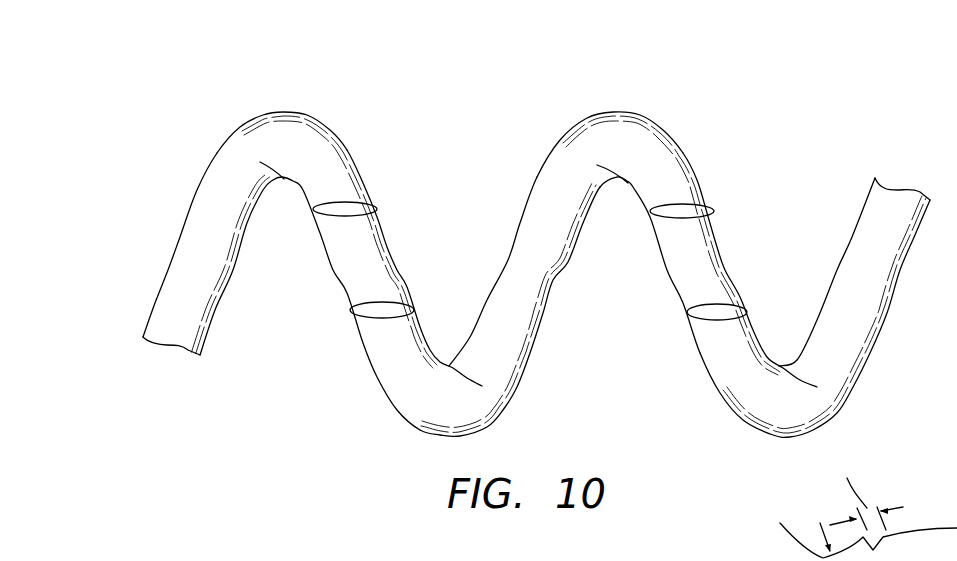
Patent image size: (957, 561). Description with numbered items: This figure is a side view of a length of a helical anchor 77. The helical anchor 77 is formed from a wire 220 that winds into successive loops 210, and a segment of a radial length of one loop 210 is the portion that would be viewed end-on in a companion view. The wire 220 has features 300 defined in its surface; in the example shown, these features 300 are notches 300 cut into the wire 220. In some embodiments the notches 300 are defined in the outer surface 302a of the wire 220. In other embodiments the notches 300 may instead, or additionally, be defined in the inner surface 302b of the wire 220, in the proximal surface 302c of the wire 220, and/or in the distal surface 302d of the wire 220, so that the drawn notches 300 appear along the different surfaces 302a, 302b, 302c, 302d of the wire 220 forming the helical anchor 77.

The helical anchor 77 is at (552, 89).
The loop 210 is at (345, 143).
The wire 220 is at (697, 168).
The notches 300 is at (358, 208).
The outer surface 302a is at (620, 116).
The inner surface 302b is at (532, 367).
The proximal surface 302c is at (733, 273).
The distal surface 302d is at (673, 270).